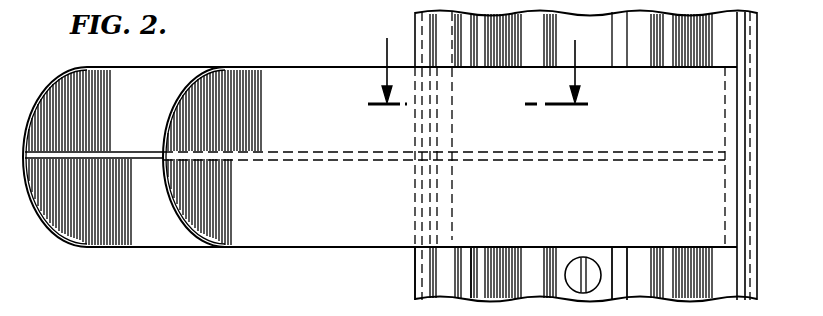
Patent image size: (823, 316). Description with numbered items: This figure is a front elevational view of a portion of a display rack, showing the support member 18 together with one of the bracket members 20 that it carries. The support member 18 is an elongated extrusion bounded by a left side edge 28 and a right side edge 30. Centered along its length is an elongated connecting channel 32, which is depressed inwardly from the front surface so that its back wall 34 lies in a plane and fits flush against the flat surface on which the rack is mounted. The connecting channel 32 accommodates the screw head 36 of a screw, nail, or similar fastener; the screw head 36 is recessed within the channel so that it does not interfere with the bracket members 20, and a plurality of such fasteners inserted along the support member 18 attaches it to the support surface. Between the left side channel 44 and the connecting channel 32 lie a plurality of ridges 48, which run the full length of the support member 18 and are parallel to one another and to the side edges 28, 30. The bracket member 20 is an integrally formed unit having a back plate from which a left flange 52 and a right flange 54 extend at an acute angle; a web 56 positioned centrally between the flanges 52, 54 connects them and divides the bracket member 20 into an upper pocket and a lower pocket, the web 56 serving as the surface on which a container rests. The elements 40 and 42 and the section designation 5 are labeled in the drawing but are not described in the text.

The support member 18 is at (414, 28).
The bracket member 20 is at (322, 72).
The left side edge 28 is at (413, 268).
The right side edge 30 is at (760, 196).
The connecting channel 32 is at (602, 264).
The back wall 34 is at (521, 281).
The screw head 36 is at (598, 258).
The rib 40 is at (686, 281).
The rib 42 is at (628, 281).
The left side channel 44 is at (455, 281).
The ridges 48 is at (681, 67).
The left flange 52 is at (95, 218).
The right flange 54 is at (307, 225).
The web 56 is at (130, 160).
The section line 5- 5 is at (480, 68).